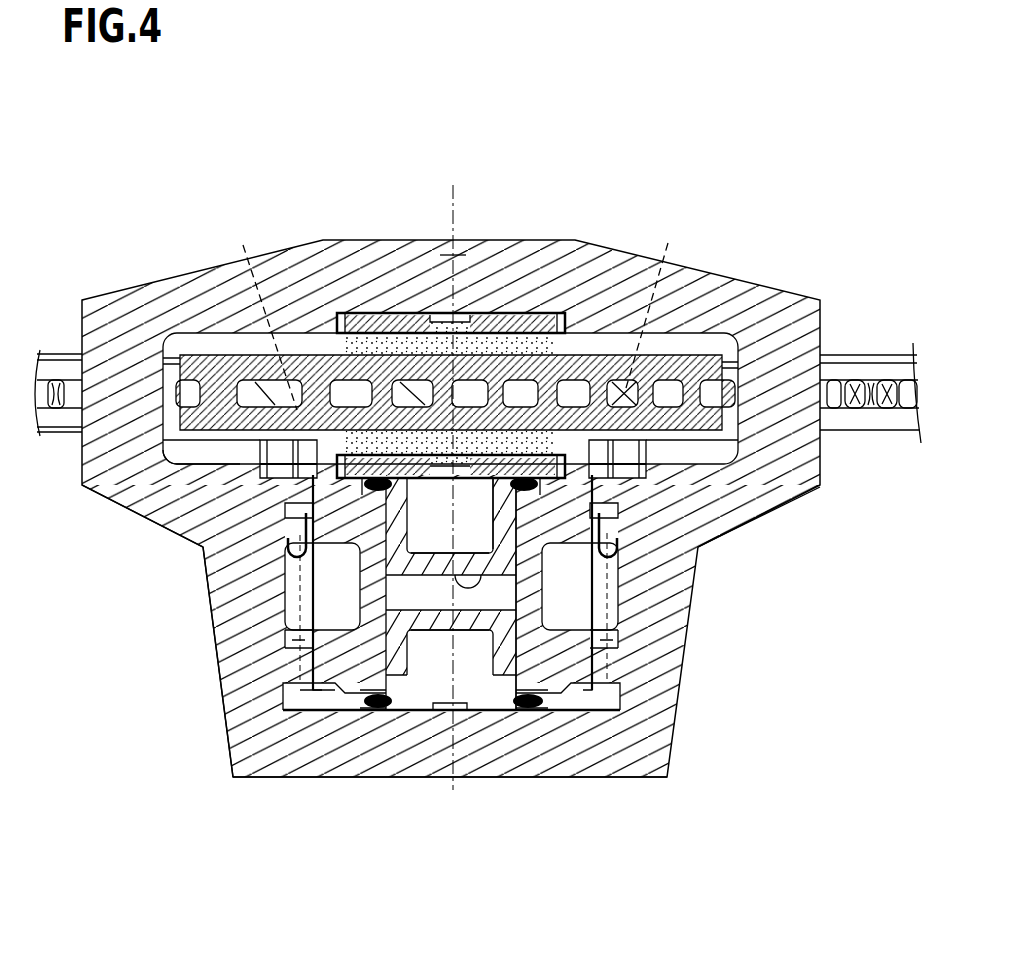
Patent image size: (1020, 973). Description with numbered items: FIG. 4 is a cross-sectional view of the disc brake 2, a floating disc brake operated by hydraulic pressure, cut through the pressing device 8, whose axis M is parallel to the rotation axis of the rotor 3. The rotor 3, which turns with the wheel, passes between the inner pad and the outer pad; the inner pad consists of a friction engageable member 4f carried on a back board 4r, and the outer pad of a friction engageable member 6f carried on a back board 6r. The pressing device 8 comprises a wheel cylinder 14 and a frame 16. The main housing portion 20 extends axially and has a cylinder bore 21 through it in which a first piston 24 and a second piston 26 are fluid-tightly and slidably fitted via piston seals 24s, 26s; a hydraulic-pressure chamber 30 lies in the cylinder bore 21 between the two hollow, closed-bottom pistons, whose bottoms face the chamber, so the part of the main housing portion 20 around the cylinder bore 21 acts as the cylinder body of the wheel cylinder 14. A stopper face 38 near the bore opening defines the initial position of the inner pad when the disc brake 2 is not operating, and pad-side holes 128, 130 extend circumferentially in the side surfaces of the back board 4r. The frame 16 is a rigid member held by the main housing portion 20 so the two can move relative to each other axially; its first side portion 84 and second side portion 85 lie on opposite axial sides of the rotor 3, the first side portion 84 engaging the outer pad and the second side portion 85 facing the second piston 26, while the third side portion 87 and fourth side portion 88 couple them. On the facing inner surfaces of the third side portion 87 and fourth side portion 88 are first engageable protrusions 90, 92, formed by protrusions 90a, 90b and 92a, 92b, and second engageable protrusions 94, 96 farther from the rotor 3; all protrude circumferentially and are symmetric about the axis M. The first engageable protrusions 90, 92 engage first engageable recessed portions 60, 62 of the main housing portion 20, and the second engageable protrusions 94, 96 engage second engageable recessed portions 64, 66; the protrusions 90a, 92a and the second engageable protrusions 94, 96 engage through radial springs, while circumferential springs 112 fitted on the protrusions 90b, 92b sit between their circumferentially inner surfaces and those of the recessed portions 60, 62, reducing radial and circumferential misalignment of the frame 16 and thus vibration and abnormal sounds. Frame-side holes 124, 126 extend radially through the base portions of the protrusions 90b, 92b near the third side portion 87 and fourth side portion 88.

The disc brake 2 is at (287, 216).
The rotor 3 is at (60, 377).
The frame 16 is at (809, 290).
The pressing device 8 is at (226, 811).
The first piston 24 is at (383, 334).
The piston seal 24s is at (262, 464).
The stopper face 38 is at (340, 312).
The back board 6r is at (415, 315).
The friction engageable member 6f is at (478, 316).
The friction engageable member 4f is at (512, 350).
The back board 4r is at (540, 340).
The first side portion 84 is at (440, 255).
The axis of the pressing device M is at (452, 474).
The pad-side hole 128 is at (259, 312).
The pad-side hole 130 is at (658, 301).
The third side portion 87 is at (117, 477).
The first engageable recessed portion 60 is at (207, 472).
The first engageable recessed portion 62 is at (622, 460).
The fourth side portion 88 is at (718, 518).
The first engageable protrusions 90 is at (258, 520).
The protrusion 90a is at (303, 477).
The protrusion 90b is at (292, 608).
The first engageable protrusions 92 is at (648, 517).
The protrusion 92a is at (642, 400).
The protrusion 92b is at (614, 608).
The frame-side hole 124 is at (285, 541).
The frame-side hole 126 is at (615, 541).
The circumferential spring 112 is at (298, 560).
The second engageable recessed portion 64 is at (272, 644).
The second engageable recessed portion 66 is at (634, 644).
The second engageable protrusion 94 is at (233, 770).
The second engageable protrusion 96 is at (598, 686).
The piston seal 26s is at (310, 692).
The second side portion 85 is at (336, 757).
The cylinder bore 21 is at (415, 665).
The hydraulic-pressure chamber 30 is at (428, 665).
The second piston 26 is at (500, 700).
The wheel cylinder 14 is at (548, 706).
The main housing portion 20 is at (552, 714).